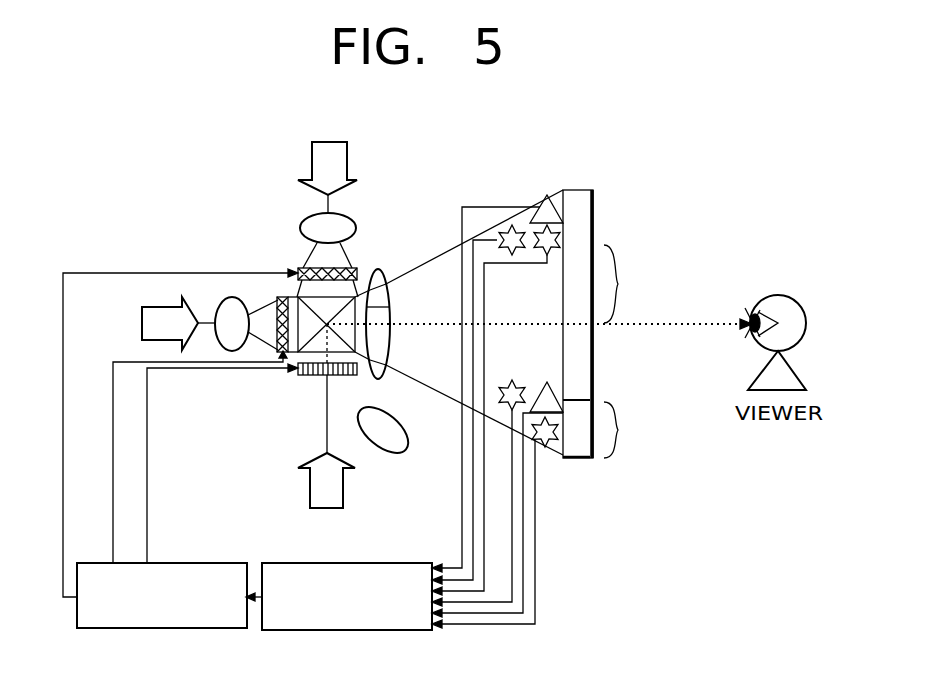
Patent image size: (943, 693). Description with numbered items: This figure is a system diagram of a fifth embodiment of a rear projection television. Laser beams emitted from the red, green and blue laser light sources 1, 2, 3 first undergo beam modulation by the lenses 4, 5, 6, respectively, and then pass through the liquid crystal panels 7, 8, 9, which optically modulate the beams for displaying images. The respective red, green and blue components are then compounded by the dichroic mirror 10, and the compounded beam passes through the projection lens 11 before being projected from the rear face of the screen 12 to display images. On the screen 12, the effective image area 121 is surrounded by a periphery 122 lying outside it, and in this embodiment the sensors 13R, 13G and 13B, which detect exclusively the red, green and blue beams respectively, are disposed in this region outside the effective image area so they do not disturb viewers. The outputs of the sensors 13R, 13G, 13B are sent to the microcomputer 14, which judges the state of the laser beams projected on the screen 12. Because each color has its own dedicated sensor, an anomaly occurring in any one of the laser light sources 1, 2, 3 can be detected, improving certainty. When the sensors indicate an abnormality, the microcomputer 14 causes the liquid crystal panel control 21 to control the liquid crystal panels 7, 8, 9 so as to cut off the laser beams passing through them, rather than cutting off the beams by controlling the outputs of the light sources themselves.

The R laser light source 1 is at (165, 305).
The G laser light source 2 is at (348, 150).
The B laser light source 3 is at (310, 492).
The lens 4 is at (232, 297).
The lens 5 is at (318, 212).
The lens 6 is at (405, 432).
The liquid crystal panel 7 is at (280, 296).
The liquid crystal panel 8 is at (300, 268).
The liquid crystal panel 9 is at (310, 377).
The dichroic mirror 10 is at (390, 304).
The projection lens 11 is at (390, 348).
The screen 12 is at (594, 212).
The effective image area 121 is at (650, 284).
The periphery 122 is at (650, 430).
The sensor 13B is at (512, 225).
The sensor 13G is at (547, 195).
The sensor 13R is at (563, 240).
The microcomputer 14 is at (382, 563).
The liquid crystal panel control 21 is at (187, 563).